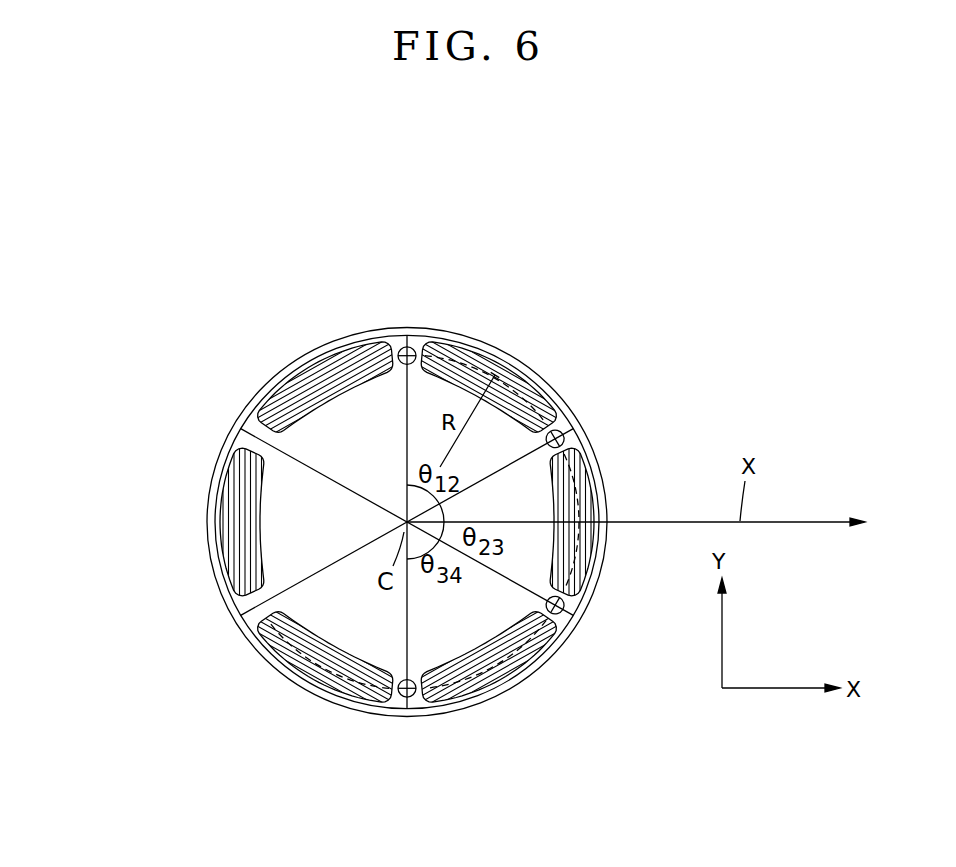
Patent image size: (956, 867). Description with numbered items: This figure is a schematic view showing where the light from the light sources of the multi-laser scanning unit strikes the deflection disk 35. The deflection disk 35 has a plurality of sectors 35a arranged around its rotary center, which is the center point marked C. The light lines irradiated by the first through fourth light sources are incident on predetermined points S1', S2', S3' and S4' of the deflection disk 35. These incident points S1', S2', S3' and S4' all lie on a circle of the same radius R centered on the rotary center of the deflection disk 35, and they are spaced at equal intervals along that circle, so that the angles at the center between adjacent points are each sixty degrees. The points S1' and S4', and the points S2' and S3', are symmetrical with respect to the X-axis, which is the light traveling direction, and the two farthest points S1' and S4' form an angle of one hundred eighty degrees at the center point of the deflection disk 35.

The deflection disk 35 is at (203, 615).
The sectors 35a is at (255, 648).
The incident point S1' is at (438, 321).
The incident point S2' is at (588, 411).
The incident point S3' is at (586, 652).
The incident point S4' is at (426, 736).